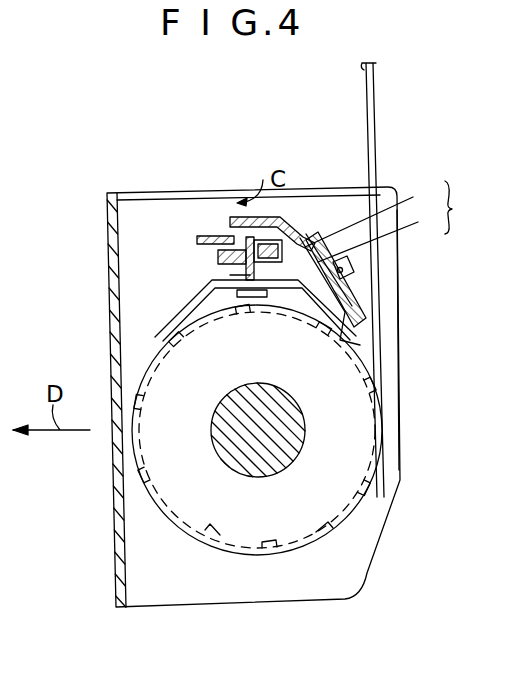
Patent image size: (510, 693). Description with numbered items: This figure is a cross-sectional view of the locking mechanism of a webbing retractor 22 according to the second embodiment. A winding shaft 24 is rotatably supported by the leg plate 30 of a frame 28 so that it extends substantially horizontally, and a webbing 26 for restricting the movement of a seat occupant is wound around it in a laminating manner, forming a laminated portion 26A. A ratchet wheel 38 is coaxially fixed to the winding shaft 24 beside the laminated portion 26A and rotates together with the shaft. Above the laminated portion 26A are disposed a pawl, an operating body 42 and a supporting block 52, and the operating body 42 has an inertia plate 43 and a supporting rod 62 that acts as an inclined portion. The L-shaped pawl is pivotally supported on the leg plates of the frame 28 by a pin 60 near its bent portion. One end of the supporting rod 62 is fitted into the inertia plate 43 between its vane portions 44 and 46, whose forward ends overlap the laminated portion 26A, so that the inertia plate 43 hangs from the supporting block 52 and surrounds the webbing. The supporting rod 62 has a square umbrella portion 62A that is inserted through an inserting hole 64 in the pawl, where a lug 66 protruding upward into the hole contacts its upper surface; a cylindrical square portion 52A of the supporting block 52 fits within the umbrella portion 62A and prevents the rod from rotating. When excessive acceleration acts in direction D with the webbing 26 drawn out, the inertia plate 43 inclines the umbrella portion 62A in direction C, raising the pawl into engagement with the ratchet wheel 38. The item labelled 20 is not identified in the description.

The apparatus frame 20 is at (356, 200).
The webbing retractor 22 is at (77, 168).
The winding shaft 24 is at (248, 475).
The webbing 26 is at (375, 80).
The laminated portion 26A is at (173, 525).
The frame 28 is at (108, 270).
The leg plate 30 is at (172, 207).
The ratchet wheel 38 is at (298, 550).
The operating body 42 is at (465, 207).
The inertia plate 43 is at (383, 235).
The vane portion 44 is at (167, 330).
The vane portion 46 is at (340, 300).
The supporting block 52 is at (218, 257).
The cylindrical square portion 52A is at (312, 238).
The pin 60 is at (347, 262).
The supporting rod 62 is at (374, 213).
The umbrella portion 62A is at (232, 237).
The inserting hole 64 is at (222, 240).
The lug 66 is at (292, 215).